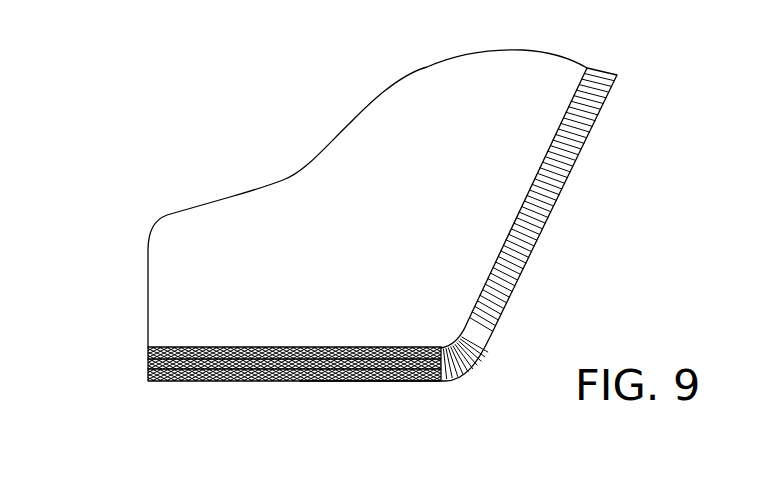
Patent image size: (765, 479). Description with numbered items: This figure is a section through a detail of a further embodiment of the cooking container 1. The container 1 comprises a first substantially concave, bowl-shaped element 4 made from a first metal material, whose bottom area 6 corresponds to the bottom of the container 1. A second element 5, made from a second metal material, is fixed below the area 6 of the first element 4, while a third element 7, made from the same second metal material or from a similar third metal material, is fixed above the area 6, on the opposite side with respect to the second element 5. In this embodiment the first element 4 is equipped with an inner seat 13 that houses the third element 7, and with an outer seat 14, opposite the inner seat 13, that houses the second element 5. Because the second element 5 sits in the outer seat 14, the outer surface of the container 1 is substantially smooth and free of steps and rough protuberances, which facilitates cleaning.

The container 1 is at (288, 107).
The first substantially concave element 4 is at (590, 137).
The second element 5 is at (362, 381).
The area of the first element 6 is at (147, 359).
The third element 7 is at (240, 346).
The inner seat 13 is at (348, 349).
The outer seat 14 is at (325, 392).